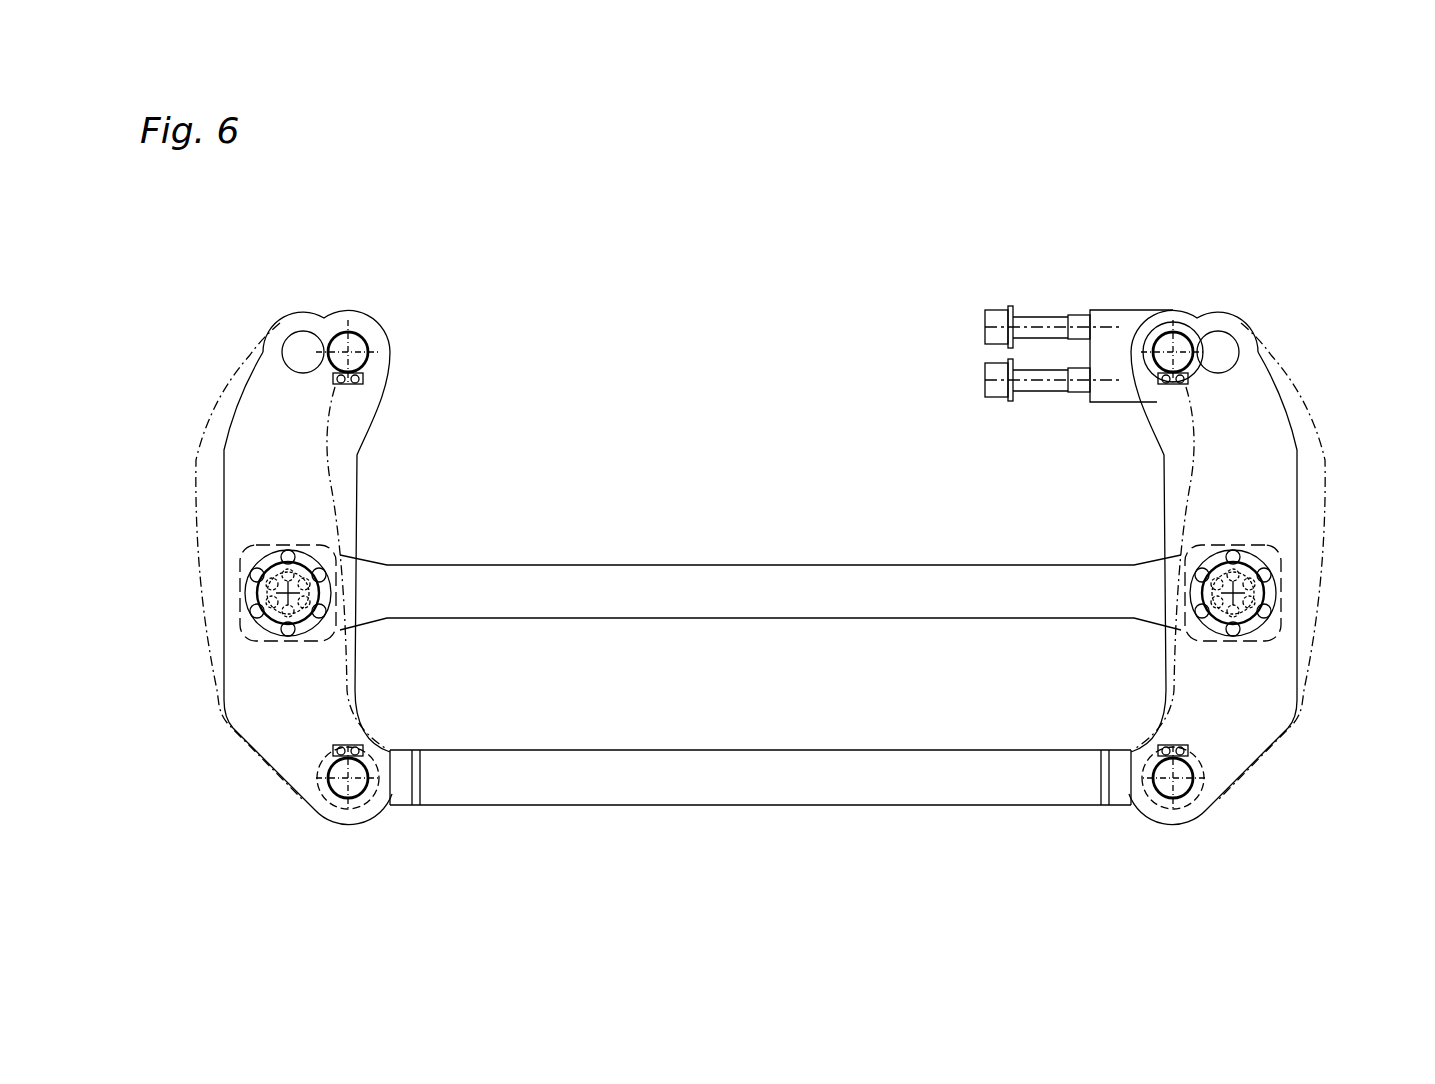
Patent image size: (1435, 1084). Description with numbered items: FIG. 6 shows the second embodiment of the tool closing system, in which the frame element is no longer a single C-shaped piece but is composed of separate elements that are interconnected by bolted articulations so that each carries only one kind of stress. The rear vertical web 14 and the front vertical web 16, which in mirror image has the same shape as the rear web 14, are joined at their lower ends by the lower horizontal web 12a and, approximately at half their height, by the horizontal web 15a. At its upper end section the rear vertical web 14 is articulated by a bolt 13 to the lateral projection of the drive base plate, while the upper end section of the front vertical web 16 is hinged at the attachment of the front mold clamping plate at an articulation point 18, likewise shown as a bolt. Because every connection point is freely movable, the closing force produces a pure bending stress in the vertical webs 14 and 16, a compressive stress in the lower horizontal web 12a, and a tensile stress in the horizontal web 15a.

The lower horizontal web 12a is at (670, 778).
The bolt 13 is at (343, 350).
The rear vertical web 14 is at (295, 427).
The horizontal web 15a is at (733, 585).
The front vertical web 16 is at (1220, 440).
The articulation point 18 is at (1192, 352).